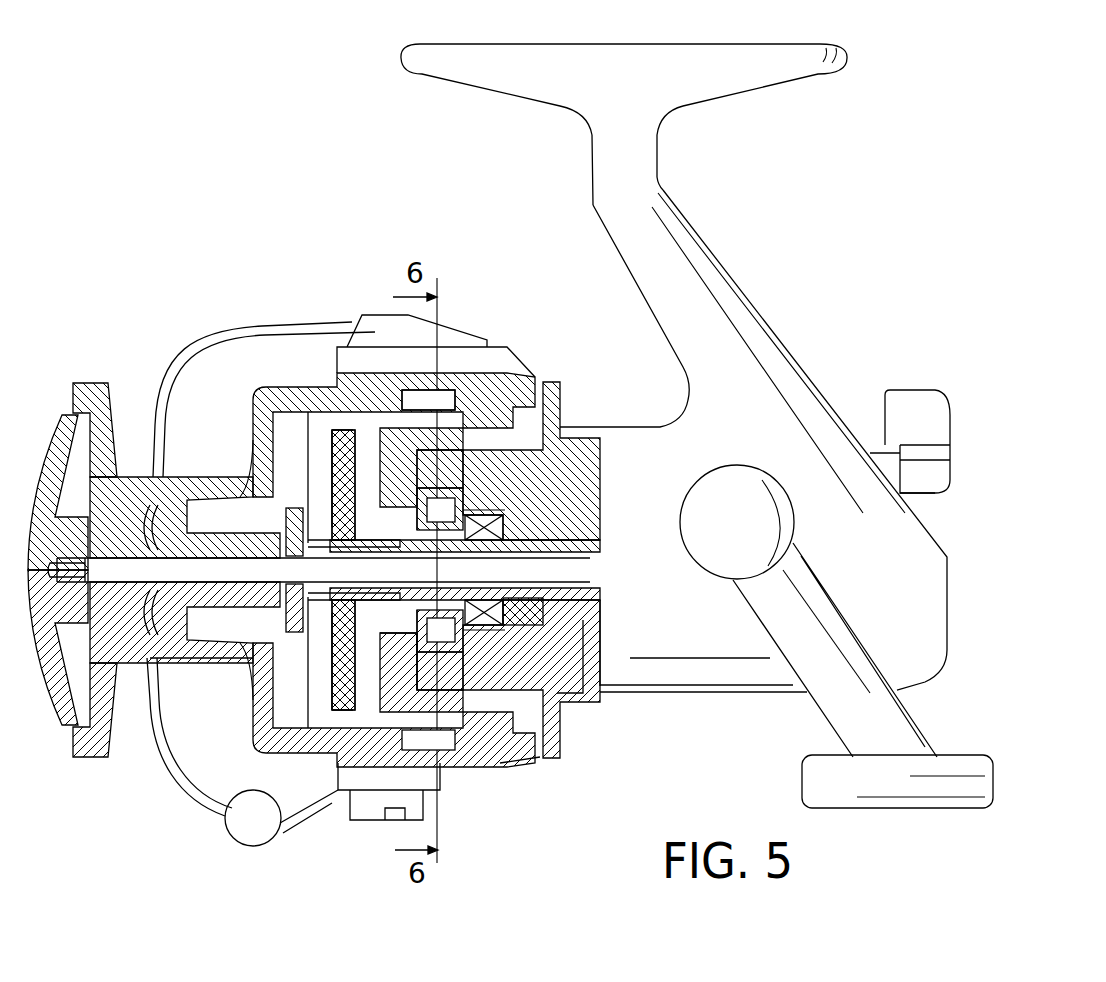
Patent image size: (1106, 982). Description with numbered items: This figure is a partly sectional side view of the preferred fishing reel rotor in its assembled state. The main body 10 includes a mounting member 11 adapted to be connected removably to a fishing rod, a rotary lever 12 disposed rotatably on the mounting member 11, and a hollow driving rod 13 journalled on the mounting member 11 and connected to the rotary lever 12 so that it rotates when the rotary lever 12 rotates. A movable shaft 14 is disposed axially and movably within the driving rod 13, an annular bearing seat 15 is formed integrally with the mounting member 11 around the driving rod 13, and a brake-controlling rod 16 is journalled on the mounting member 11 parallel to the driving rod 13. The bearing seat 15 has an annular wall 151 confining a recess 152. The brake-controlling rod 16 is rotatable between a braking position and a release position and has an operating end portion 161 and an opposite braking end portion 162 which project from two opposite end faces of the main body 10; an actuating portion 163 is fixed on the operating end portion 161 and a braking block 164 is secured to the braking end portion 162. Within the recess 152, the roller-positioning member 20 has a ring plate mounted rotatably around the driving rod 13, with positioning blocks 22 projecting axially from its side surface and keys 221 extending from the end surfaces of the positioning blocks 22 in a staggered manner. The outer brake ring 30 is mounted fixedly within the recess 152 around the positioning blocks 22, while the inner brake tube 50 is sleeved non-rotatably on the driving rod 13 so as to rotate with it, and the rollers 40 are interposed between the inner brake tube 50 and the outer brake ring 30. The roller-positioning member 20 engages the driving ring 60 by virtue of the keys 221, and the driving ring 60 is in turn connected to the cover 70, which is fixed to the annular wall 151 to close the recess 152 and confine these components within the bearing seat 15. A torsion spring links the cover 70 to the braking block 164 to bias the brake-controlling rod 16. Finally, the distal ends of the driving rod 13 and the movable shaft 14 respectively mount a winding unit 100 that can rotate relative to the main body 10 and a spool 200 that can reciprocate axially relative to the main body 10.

The main body 10 is at (762, 313).
The mounting member 11 is at (667, 222).
The rotary lever 12 is at (900, 727).
The hollow driving rod 13 is at (533, 563).
The movable shaft 14 is at (548, 553).
The annular bearing seat 15 is at (458, 628).
The brake-controlling rod 16 is at (473, 457).
The roller-positioning member 20 is at (493, 625).
The positioning blocks 22 is at (406, 652).
The outer brake ring 30 is at (433, 652).
The rollers 40 is at (372, 480).
The inner brake tube 50 is at (393, 513).
The annular driving ring 60 is at (412, 501).
The annular cover 70 is at (335, 725).
The winding unit 100 is at (527, 770).
The annular wall 151 is at (428, 470).
The recess 152 is at (473, 632).
The operating end portion 161 is at (884, 455).
The braking end portion 162 is at (410, 430).
The actuating portion 163 is at (940, 463).
The braking block 164 is at (397, 455).
The spool 200 is at (88, 758).
The keys 221 is at (340, 633).